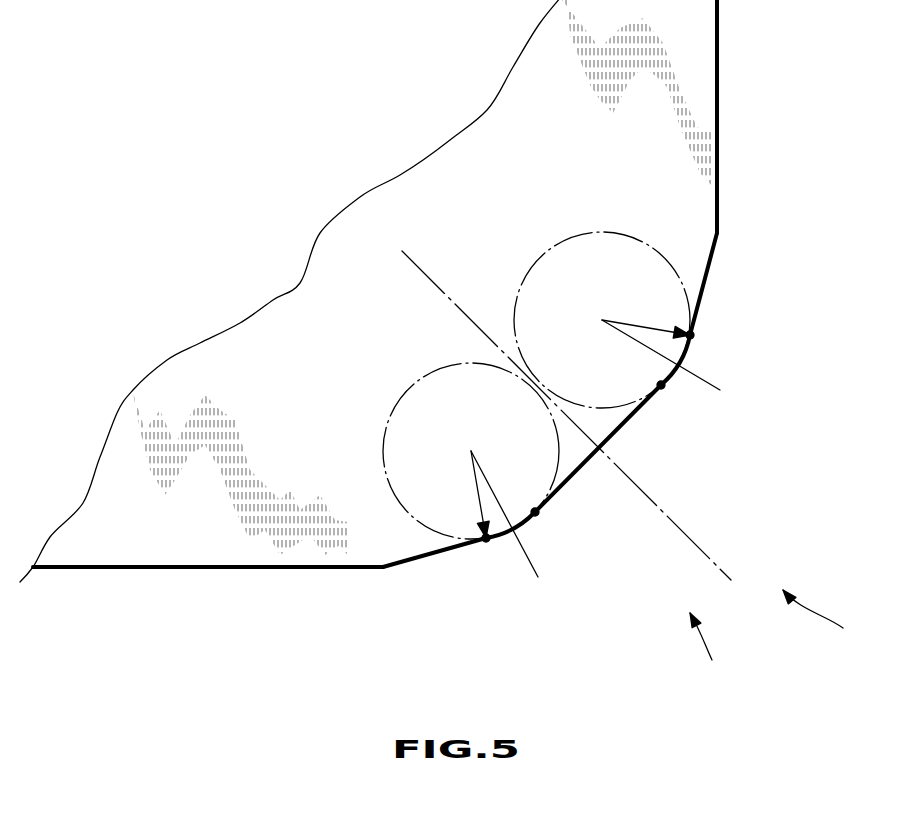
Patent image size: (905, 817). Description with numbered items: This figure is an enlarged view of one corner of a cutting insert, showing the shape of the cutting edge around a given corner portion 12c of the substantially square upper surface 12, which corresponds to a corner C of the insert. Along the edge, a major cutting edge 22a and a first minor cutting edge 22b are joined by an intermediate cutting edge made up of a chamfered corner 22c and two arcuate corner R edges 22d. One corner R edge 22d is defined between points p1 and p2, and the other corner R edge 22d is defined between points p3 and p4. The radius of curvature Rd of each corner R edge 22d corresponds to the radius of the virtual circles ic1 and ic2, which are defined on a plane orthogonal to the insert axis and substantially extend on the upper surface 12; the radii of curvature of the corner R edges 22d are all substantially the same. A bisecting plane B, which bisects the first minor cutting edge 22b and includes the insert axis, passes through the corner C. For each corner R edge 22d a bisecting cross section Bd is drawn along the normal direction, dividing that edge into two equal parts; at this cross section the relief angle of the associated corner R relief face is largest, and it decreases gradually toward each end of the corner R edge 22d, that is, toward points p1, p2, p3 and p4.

The upper surface 12 is at (247, 343).
The corner portion 12c is at (719, 659).
The major cutting edge 22a is at (718, 50).
The first minor cutting edge 22b is at (620, 432).
The chamfered corner 22c is at (718, 258).
The corner R edge 22d is at (692, 350).
The virtual circle ic1 is at (405, 393).
The virtual circle ic2 is at (598, 232).
The radius of curvature Rd is at (477, 489).
The bisecting cross section Bd is at (537, 563).
The point p1 is at (485, 543).
The point p2 is at (540, 513).
The point p3 is at (665, 388).
The point p4 is at (695, 332).
The bisecting plane B is at (707, 557).
The corner C is at (824, 618).